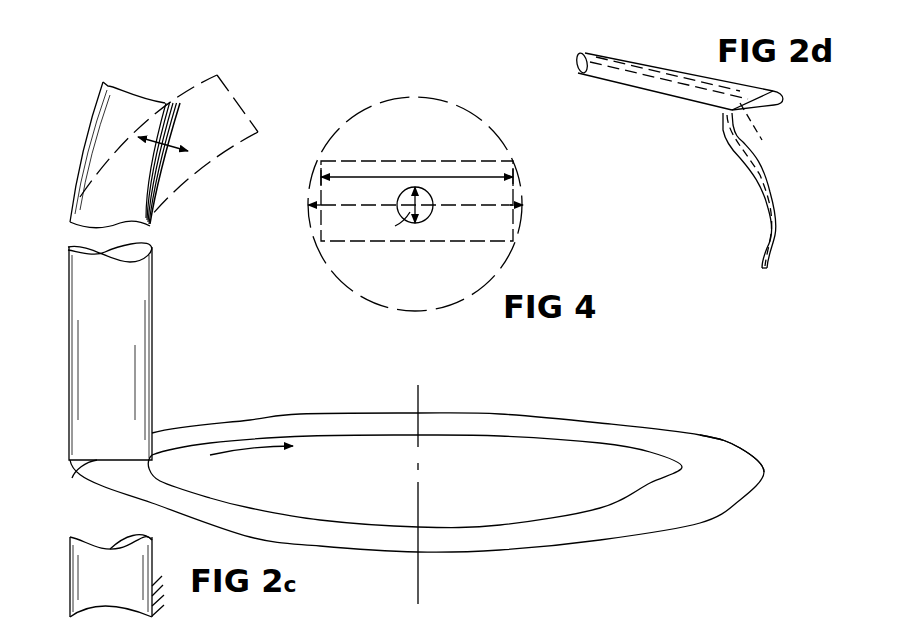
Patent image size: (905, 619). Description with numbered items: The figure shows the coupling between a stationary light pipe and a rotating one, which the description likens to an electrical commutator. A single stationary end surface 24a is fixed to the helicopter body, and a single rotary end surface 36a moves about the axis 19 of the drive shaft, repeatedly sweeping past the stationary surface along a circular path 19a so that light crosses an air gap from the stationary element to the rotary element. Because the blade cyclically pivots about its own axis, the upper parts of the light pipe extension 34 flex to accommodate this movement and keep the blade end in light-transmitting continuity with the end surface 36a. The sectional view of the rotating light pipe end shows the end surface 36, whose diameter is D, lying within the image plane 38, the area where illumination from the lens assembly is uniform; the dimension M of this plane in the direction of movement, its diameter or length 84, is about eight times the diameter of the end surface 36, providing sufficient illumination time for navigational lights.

In FIG. 2C, the light pipe extension 34 is at (85, 138).
In FIG. 2C, the end surface 36a is at (70, 468).
In FIG. 2C, the end surface 24a is at (80, 577).
In FIG. 2C, the axis 19 is at (419, 502).
In FIG. 2C, the path 19a is at (736, 453).
In FIG. 4, the end surface 36 is at (400, 207).
In FIG. 4, the diameter or length of image plane 84 is at (448, 203).
In FIG. 4, the image plane 38 is at (362, 305).